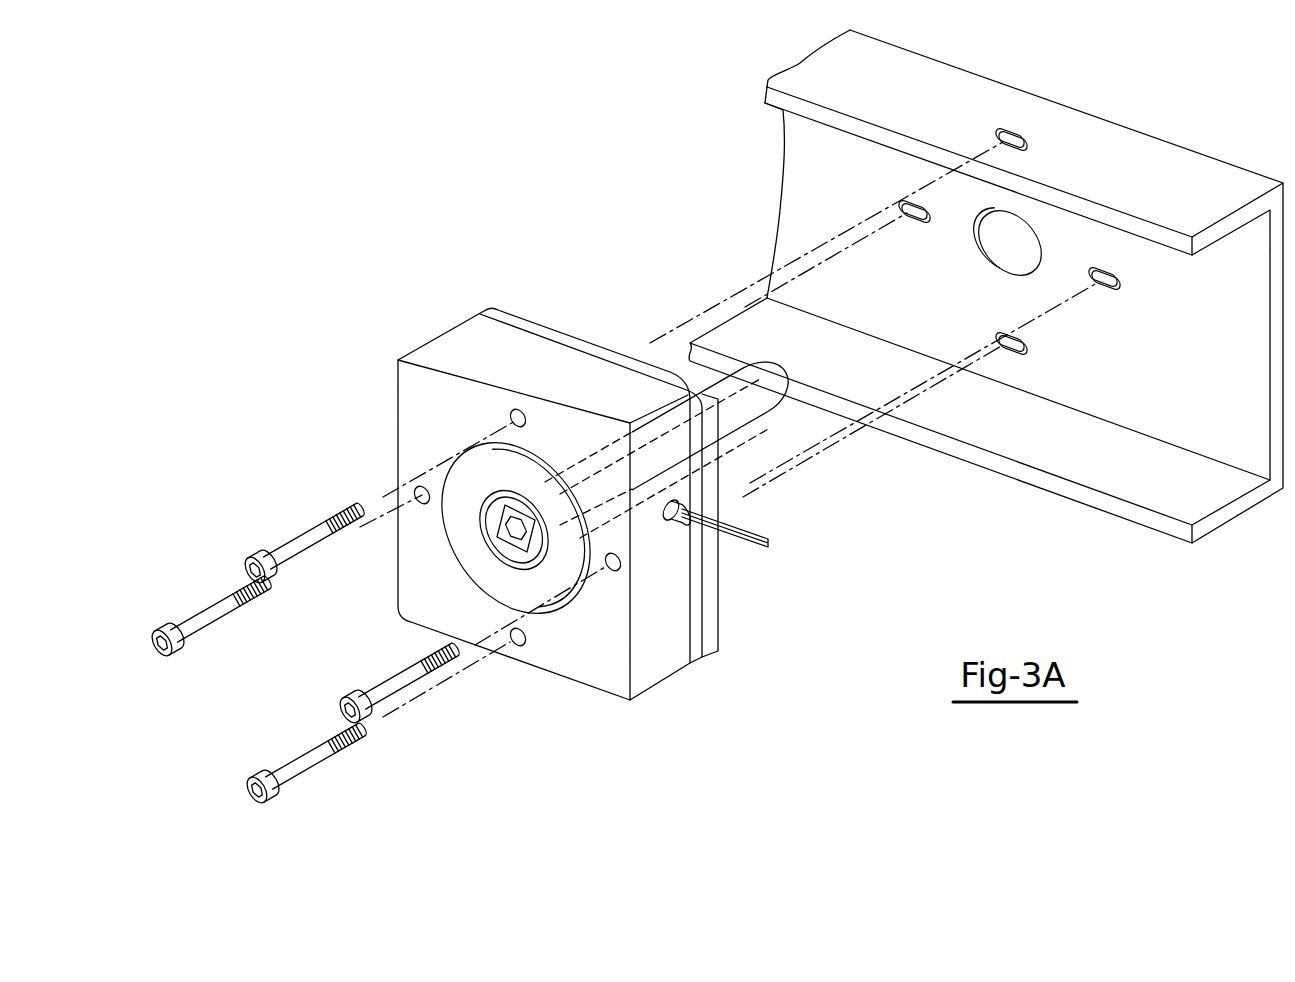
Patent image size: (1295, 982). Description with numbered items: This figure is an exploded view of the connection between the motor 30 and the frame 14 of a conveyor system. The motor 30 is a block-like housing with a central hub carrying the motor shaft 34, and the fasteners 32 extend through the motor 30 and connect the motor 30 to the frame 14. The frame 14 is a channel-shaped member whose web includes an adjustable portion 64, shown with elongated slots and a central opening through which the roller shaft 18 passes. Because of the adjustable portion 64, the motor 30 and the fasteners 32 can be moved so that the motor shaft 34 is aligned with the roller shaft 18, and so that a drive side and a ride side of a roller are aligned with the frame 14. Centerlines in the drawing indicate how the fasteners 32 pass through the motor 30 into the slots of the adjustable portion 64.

The frame 14 is at (797, 163).
The roller shaft 18 is at (750, 367).
The motor 30 is at (396, 320).
The fasteners 32 is at (210, 613).
The motor shaft 34 is at (511, 504).
The adjustable portion 64 is at (1082, 338).